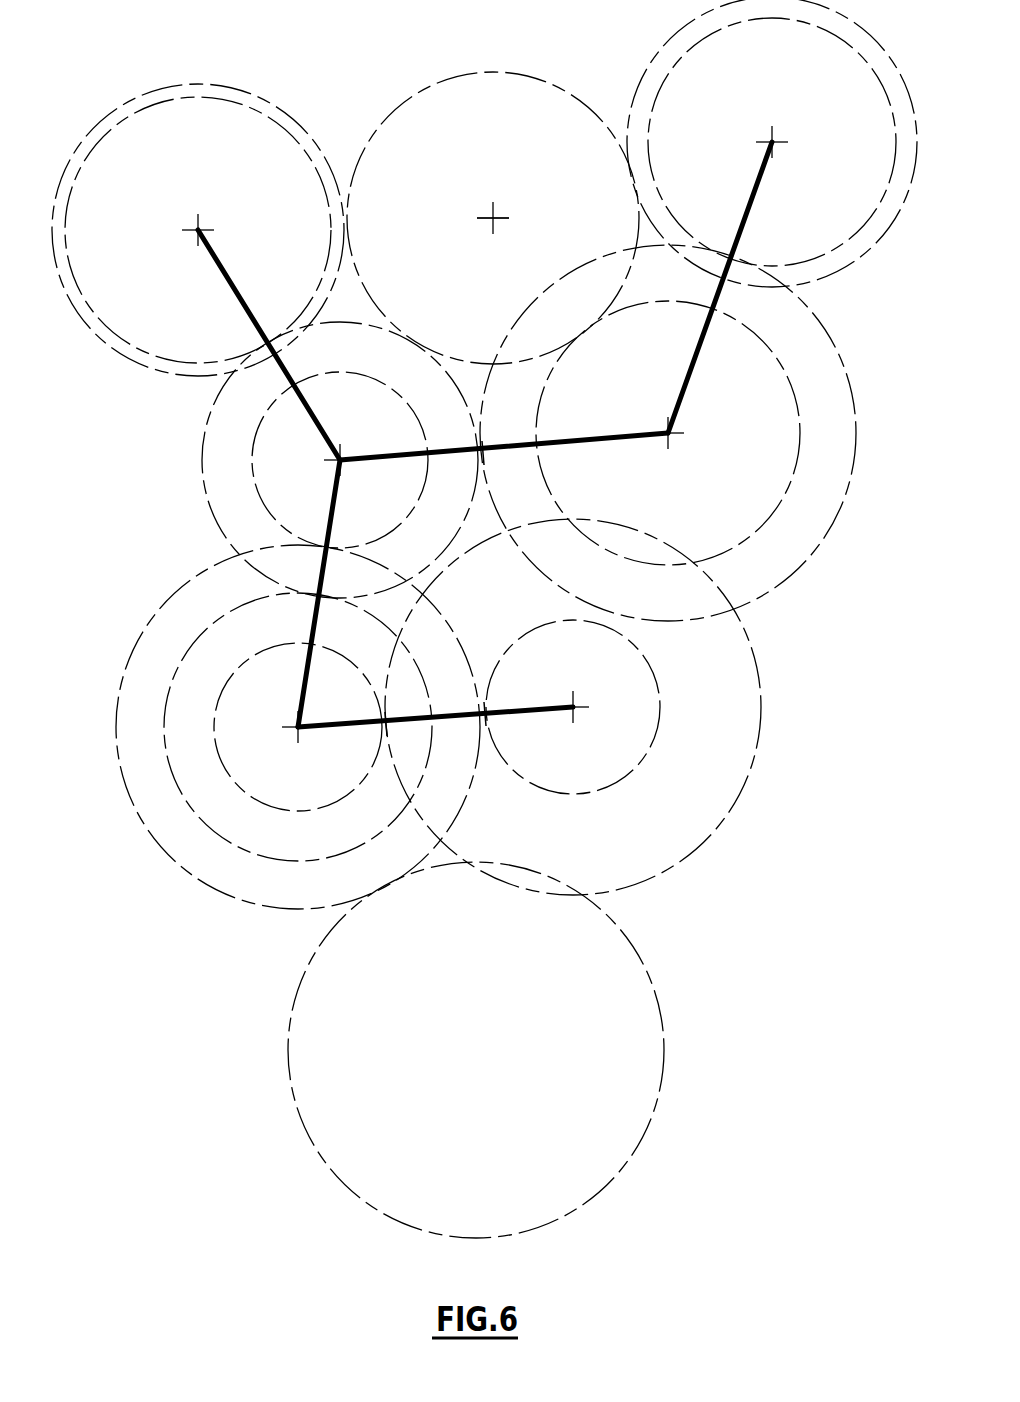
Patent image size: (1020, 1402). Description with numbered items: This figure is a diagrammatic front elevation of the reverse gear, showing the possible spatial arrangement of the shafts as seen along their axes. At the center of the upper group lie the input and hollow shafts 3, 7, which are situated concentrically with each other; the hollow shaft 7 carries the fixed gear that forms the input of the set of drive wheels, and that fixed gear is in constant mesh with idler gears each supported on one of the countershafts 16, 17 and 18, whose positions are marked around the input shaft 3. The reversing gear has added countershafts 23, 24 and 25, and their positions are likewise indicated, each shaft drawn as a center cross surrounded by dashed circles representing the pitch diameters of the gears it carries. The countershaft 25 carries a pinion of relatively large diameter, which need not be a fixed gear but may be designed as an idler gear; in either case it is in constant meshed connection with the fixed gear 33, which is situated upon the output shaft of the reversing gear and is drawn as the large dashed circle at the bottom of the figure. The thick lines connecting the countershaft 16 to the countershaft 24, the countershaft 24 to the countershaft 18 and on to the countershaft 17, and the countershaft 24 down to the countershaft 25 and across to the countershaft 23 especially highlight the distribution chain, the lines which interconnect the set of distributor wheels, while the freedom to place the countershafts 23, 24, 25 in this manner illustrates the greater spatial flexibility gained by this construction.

The countershaft 16 is at (204, 228).
The input shaft 3 is at (498, 220).
The hollow shaft 7 is at (498, 220).
The countershaft 17 is at (778, 140).
The countershaft 24 is at (336, 466).
The countershaft 18 is at (672, 440).
The countershaft 25 is at (294, 732).
The countershaft 23 is at (578, 708).
The fixed gear 33 is at (630, 942).